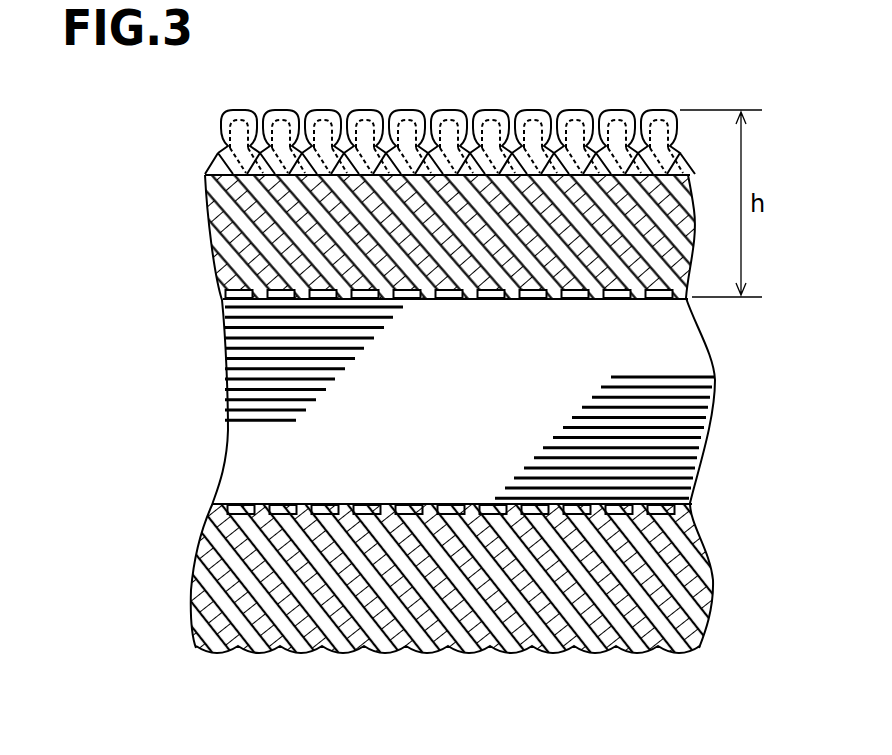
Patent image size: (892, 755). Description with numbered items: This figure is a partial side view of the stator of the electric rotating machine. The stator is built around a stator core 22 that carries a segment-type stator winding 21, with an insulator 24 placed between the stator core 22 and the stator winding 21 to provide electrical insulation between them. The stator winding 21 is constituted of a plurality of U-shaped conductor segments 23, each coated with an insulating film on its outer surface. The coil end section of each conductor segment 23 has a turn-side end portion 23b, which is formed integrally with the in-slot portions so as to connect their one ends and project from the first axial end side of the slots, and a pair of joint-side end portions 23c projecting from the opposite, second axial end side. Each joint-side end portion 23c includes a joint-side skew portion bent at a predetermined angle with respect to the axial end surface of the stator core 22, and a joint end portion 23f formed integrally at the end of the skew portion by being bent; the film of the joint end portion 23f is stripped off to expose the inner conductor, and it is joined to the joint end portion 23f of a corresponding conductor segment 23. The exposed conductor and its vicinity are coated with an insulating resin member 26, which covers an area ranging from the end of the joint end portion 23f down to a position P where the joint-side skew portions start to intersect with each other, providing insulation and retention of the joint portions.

The stator winding 21 is at (724, 565).
The stator core 22 is at (258, 463).
The conductor segment 23 is at (327, 670).
The turn-side end portion 23b is at (178, 587).
The joint-side end portion 23c is at (193, 236).
The joint end portion 23f is at (646, 112).
The insulator 24 is at (224, 295).
The insulating resin member 26 is at (610, 110).
The position where the joint-side skew portions start to intersect with each other P is at (193, 179).